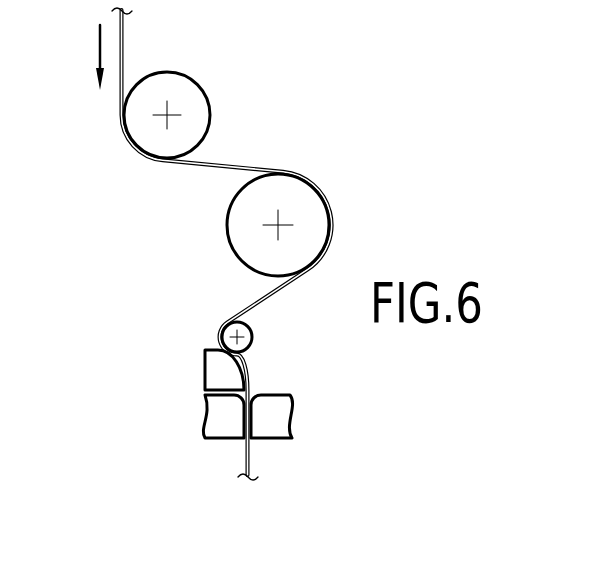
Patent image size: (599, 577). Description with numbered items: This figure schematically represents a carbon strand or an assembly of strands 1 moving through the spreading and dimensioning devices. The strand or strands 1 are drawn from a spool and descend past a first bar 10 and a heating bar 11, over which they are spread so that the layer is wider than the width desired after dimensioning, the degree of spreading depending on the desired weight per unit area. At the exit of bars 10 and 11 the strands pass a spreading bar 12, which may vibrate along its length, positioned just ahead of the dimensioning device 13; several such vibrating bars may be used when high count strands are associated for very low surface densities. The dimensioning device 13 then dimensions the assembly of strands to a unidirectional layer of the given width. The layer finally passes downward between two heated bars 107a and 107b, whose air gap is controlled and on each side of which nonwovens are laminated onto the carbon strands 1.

The carbon strand 1 is at (226, 163).
The bar 10 is at (172, 82).
The heating bar 11 is at (240, 226).
The spreading bar 12 is at (253, 337).
The dimensioning device 13 is at (215, 372).
The heated bar 107a is at (220, 428).
The heated bar 107b is at (275, 428).